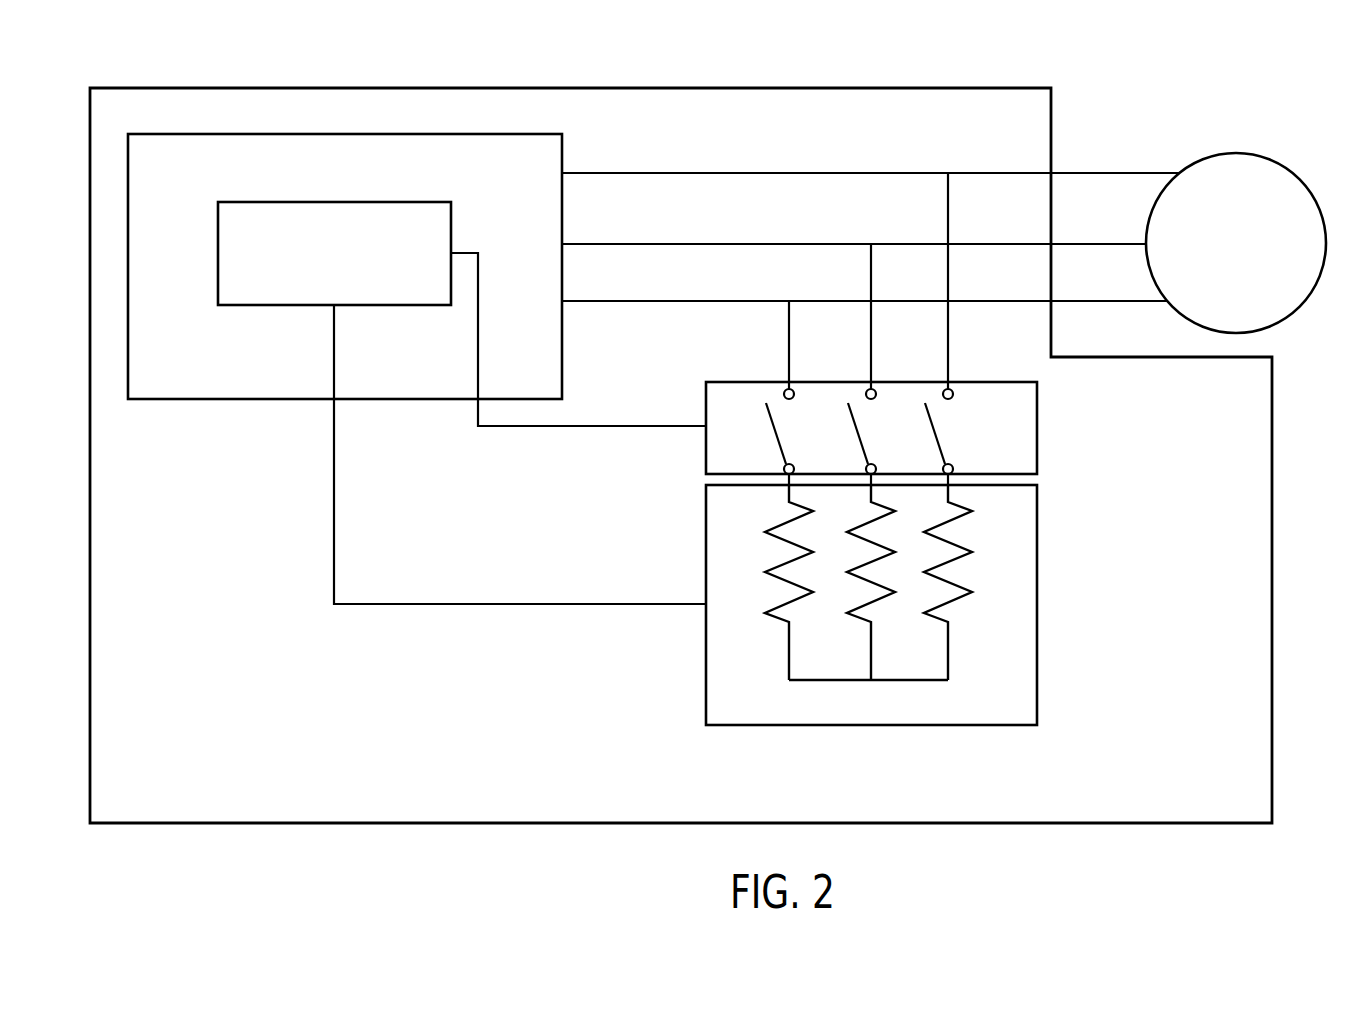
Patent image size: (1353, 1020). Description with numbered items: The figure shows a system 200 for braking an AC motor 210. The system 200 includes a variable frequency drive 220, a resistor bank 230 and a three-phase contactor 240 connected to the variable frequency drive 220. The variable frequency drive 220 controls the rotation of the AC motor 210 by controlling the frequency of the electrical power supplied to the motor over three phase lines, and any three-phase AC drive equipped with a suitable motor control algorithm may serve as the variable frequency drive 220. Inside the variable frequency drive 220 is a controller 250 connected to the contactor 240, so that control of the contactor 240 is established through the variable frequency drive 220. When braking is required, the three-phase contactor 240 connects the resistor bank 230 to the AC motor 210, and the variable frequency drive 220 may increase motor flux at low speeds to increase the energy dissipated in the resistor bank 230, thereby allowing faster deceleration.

The system 200 is at (205, 87).
The AC motor 210 is at (1237, 152).
The variable frequency drive 220 is at (206, 400).
The resistor bank 230 is at (1037, 604).
The three-phase contactor 240 is at (1037, 430).
The controller 250 is at (345, 201).